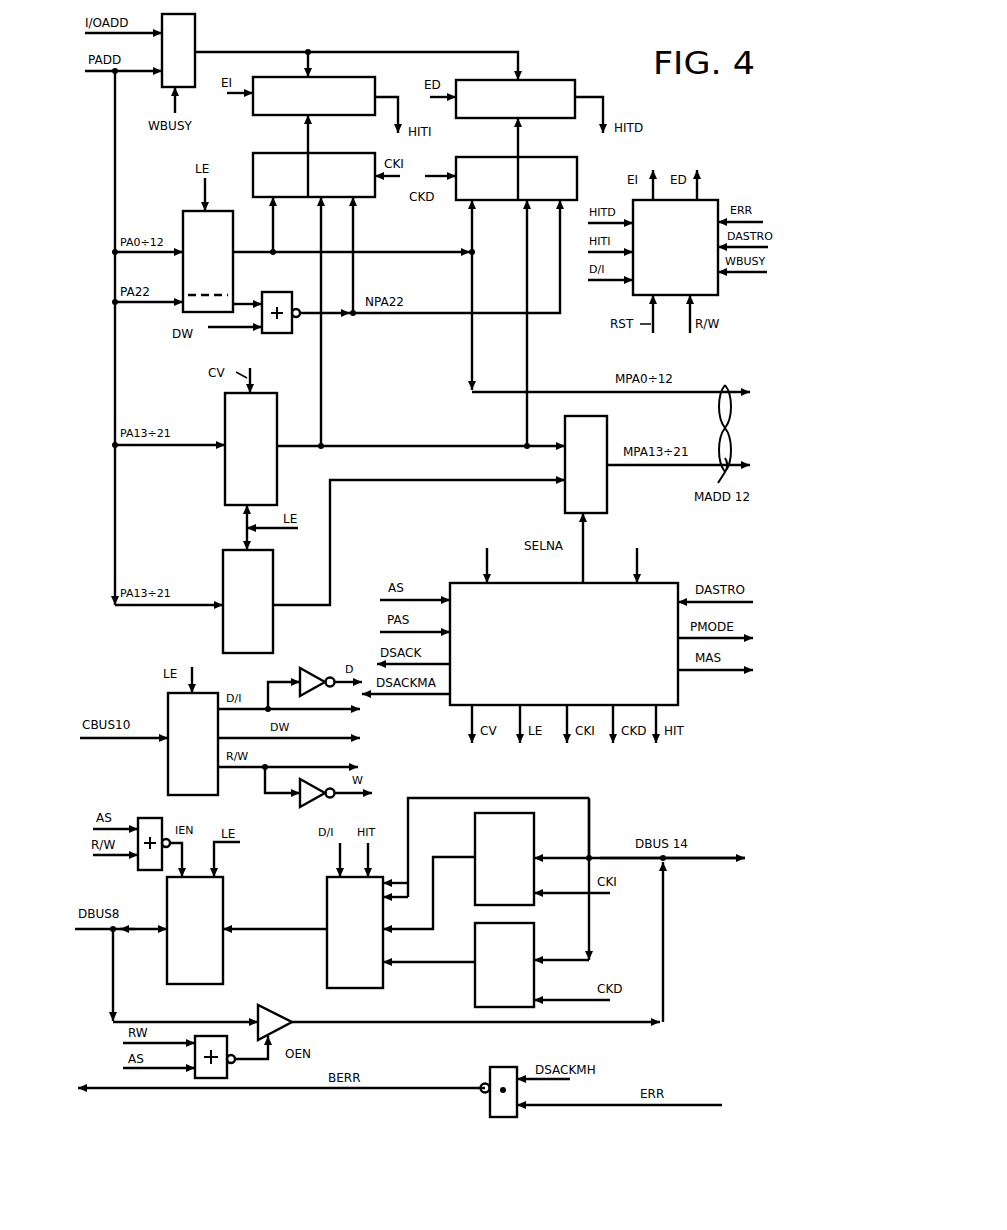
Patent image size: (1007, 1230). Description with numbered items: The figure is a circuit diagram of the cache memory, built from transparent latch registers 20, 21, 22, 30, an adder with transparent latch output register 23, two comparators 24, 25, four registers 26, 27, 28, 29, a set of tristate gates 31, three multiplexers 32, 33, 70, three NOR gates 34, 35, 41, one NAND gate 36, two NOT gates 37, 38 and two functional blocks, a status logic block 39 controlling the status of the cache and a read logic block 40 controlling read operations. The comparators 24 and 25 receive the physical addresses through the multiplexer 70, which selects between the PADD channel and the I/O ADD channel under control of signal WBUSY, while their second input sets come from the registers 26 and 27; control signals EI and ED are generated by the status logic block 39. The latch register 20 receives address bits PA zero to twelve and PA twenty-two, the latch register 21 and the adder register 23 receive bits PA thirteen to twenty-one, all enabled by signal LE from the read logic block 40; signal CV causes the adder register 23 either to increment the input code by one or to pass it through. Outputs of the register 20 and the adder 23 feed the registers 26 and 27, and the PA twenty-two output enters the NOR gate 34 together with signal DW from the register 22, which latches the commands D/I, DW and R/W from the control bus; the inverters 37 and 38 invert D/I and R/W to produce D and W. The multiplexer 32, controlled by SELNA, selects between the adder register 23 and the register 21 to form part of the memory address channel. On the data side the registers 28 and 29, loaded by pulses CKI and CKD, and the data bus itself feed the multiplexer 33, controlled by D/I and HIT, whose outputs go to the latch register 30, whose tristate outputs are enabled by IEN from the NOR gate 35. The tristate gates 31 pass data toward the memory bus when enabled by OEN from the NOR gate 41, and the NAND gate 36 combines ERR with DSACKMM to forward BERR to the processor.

The multiplexer 70 is at (197, 30).
The adder with transparent latch output register 23 is at (277, 420).
The comparator 24 is at (362, 80).
The comparator 25 is at (558, 82).
The register 26 is at (325, 153).
The register 27 is at (532, 157).
The transparent latch register 20 is at (233, 236).
The NOR gate 34 is at (283, 290).
The status logic block 39 is at (716, 203).
The transparent latch register 21 is at (273, 580).
The multiplexer 32 is at (607, 493).
The read logic block 40 is at (678, 585).
The transparent latch register 22 is at (168, 705).
The inverter 37 is at (320, 668).
The inverter 38 is at (308, 810).
The NOR gate 35 is at (158, 820).
The transparent latch register 30 is at (225, 900).
The multiplexer 33 is at (327, 966).
The register 28 is at (537, 847).
The register 29 is at (537, 957).
The tristate gates 31 is at (283, 1009).
The NOR gate 41 is at (229, 1073).
The NAND gate 36 is at (490, 1070).